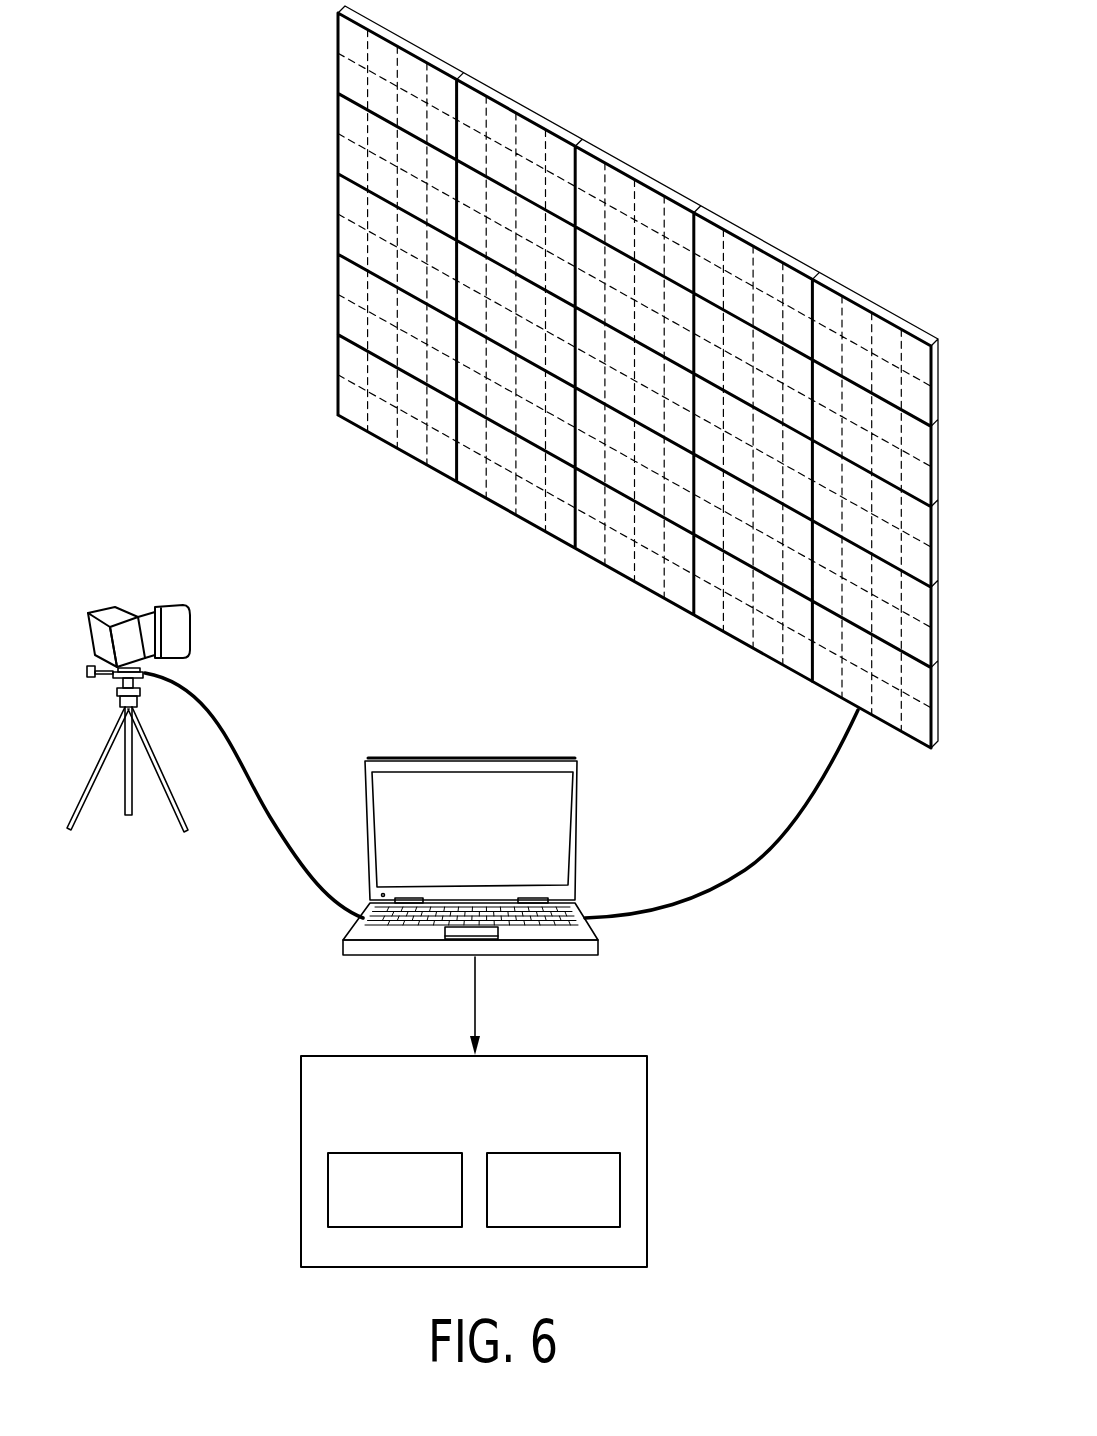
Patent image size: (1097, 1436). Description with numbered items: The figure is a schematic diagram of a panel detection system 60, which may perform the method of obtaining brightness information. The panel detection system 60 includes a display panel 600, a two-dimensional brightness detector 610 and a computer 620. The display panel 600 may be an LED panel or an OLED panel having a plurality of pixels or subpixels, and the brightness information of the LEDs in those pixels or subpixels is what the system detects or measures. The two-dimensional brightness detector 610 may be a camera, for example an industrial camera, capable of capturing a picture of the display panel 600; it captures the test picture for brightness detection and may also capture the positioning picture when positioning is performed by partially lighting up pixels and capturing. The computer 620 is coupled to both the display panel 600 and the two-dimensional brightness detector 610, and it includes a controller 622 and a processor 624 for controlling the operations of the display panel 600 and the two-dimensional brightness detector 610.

The panel detection system 60 is at (160, 115).
The display panel 600 is at (779, 257).
The 2-dimensional (2D) brightness detector 610 is at (129, 612).
The computer 620 is at (475, 755).
The controller 622 is at (388, 1152).
The processor 624 is at (547, 1152).